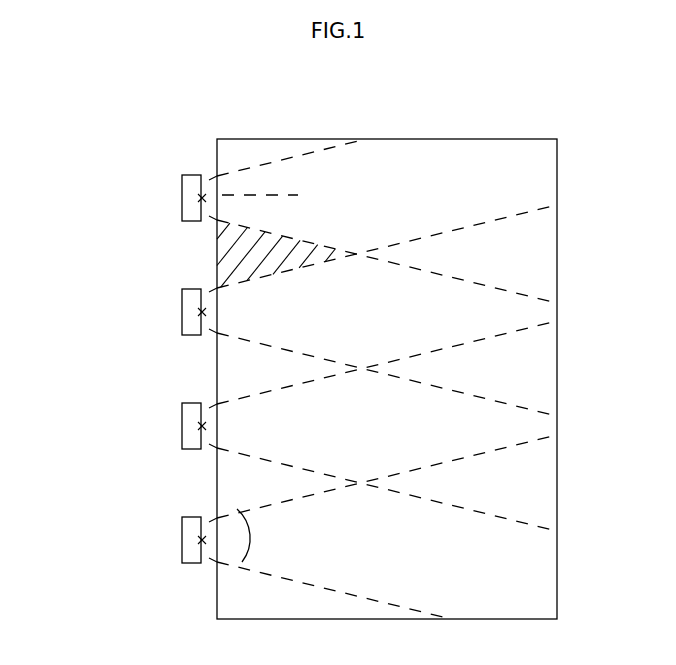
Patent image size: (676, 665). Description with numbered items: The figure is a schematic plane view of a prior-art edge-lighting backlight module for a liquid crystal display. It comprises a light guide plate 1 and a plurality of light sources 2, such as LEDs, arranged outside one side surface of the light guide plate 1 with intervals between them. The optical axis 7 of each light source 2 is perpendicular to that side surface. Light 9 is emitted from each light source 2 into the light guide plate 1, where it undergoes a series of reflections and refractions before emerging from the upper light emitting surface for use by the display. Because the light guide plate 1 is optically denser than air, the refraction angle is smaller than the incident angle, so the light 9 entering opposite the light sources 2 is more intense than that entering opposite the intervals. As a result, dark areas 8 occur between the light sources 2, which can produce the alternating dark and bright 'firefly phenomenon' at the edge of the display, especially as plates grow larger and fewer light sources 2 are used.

The light guide plate 1 is at (362, 155).
The light source 2 is at (184, 312).
The optical axis 7 is at (300, 196).
The dark area 8 is at (218, 252).
The light 9 is at (405, 240).